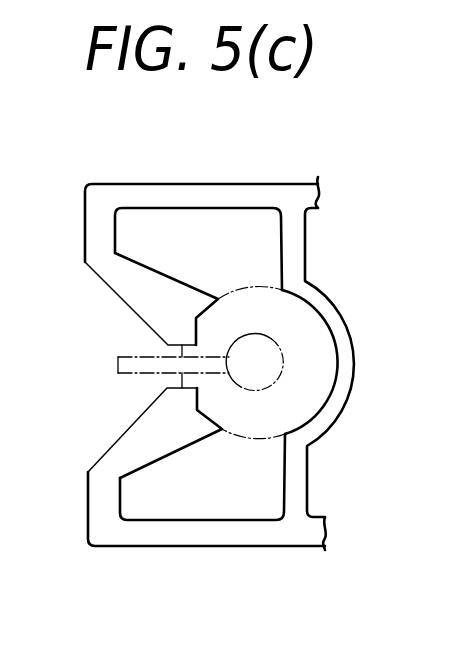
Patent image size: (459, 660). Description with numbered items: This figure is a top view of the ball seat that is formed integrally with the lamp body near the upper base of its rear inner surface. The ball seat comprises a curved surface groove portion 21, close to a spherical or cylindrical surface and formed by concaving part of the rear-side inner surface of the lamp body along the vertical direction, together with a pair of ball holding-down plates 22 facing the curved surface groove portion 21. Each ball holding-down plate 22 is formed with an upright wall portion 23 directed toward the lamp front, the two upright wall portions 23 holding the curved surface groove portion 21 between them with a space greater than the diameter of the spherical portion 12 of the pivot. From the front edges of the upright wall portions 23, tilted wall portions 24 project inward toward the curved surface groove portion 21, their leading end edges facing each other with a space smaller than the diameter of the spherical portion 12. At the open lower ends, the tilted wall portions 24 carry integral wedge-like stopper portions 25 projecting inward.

The spherical portion 12 is at (280, 329).
The curved surface groove portion 21 is at (322, 367).
The ball holding-down plate 22 is at (250, 184).
The upright wall portion 23 is at (160, 195).
The tilted wall portion 24 is at (130, 273).
The wedge-like stopper portion 25 is at (163, 413).